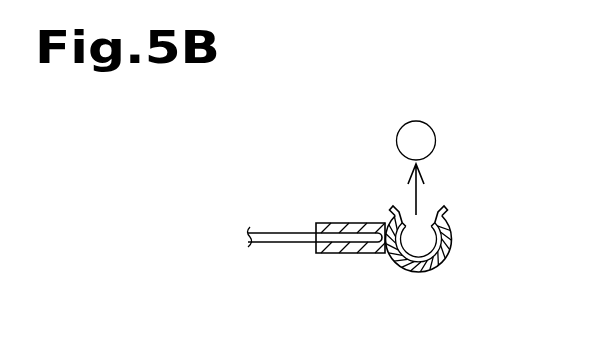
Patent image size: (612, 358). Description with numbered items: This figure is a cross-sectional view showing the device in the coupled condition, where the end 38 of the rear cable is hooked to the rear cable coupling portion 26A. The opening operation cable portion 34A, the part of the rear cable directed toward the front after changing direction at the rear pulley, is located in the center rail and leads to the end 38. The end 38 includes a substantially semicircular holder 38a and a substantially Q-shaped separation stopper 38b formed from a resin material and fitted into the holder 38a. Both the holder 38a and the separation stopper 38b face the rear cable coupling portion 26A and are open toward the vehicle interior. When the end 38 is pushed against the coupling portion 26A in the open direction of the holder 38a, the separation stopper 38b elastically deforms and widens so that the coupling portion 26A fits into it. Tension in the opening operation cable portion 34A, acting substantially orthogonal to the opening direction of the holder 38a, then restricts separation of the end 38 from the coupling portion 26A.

The rear cable coupling portion 26A is at (436, 139).
The opening operation cable portion 34A is at (268, 243).
The end 38 is at (342, 254).
The holder 38a is at (408, 273).
The separation stopper 38b is at (433, 251).